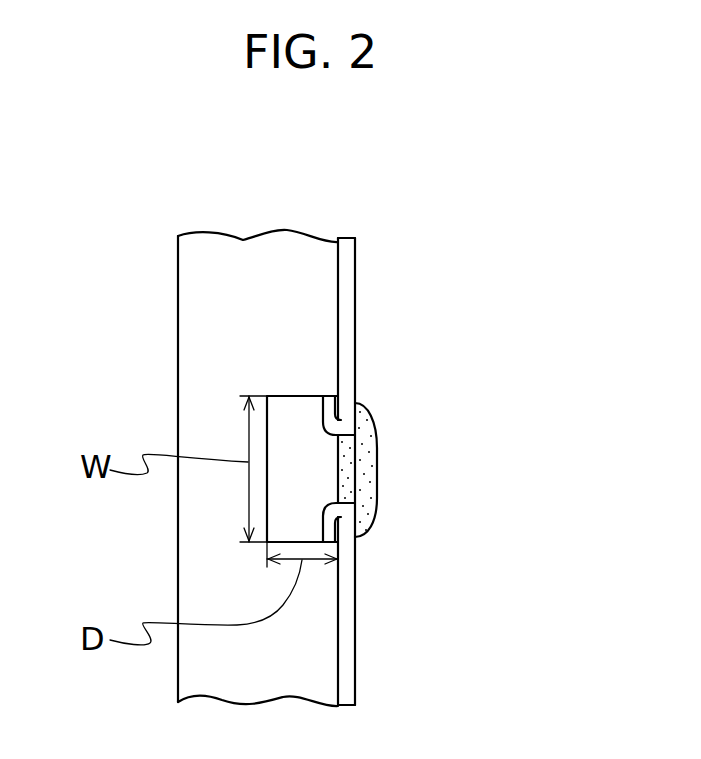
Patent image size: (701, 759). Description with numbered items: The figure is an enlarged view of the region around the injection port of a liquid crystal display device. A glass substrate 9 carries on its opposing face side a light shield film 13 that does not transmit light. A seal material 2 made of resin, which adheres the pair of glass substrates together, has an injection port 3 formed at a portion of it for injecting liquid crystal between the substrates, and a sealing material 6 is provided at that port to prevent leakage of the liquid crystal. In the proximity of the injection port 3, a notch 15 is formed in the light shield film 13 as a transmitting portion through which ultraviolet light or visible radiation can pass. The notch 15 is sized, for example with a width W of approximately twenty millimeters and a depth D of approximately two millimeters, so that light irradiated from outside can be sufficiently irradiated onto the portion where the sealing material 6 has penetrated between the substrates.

The notch 15 is at (301, 440).
The light shield film 13 is at (320, 297).
The glass substrate 9 is at (350, 598).
The seal material 2 is at (325, 415).
The injection port 3 is at (325, 476).
The sealing material 6 is at (367, 435).